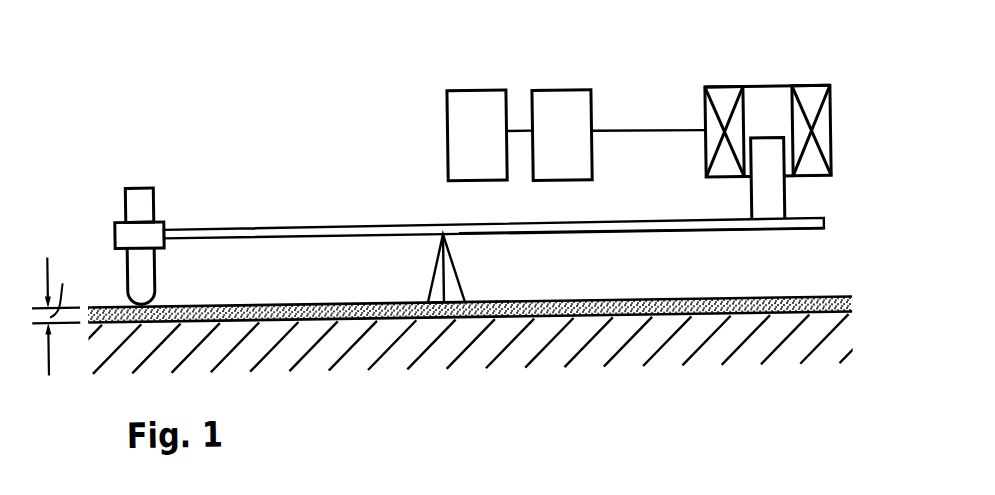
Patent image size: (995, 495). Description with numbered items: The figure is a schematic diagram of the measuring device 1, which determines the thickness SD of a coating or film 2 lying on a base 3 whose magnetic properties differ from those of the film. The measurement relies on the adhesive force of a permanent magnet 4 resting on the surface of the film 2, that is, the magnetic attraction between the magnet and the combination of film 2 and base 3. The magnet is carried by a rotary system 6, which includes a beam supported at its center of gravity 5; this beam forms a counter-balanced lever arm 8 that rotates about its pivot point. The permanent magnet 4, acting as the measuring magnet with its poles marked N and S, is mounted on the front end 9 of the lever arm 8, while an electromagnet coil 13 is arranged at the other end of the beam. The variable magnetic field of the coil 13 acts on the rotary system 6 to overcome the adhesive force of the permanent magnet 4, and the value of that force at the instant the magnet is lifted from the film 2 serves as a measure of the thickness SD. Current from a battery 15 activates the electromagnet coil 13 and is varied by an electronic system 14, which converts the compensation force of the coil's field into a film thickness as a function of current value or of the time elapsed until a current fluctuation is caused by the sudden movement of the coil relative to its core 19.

The measuring device 1 is at (207, 138).
The film 2 is at (824, 307).
The base 3 is at (811, 361).
The permanent magnet 4 is at (147, 264).
The center of gravity 5 is at (441, 243).
The rotary system 6 is at (397, 226).
The lever arm 8 is at (633, 238).
The front end 9 is at (170, 231).
The electromagnet coil 13 is at (809, 104).
The electronic system 14 is at (553, 104).
The battery 15 is at (470, 104).
The core 19 is at (779, 208).